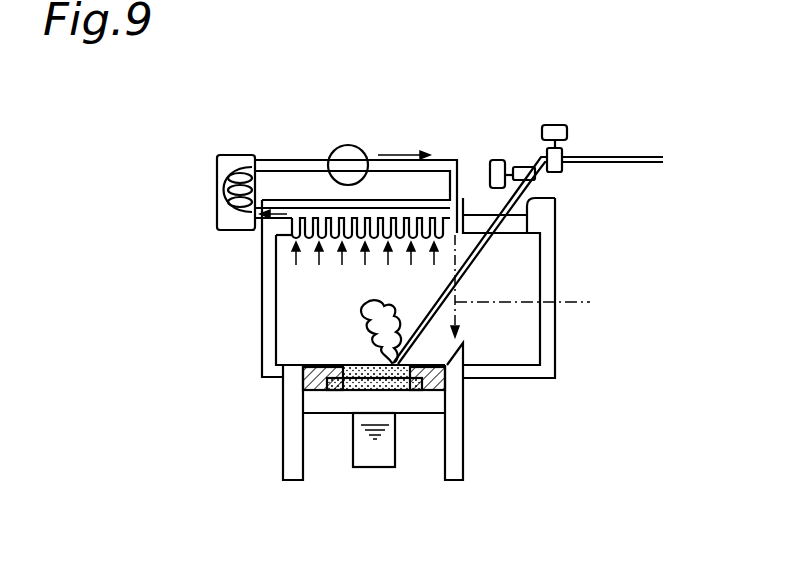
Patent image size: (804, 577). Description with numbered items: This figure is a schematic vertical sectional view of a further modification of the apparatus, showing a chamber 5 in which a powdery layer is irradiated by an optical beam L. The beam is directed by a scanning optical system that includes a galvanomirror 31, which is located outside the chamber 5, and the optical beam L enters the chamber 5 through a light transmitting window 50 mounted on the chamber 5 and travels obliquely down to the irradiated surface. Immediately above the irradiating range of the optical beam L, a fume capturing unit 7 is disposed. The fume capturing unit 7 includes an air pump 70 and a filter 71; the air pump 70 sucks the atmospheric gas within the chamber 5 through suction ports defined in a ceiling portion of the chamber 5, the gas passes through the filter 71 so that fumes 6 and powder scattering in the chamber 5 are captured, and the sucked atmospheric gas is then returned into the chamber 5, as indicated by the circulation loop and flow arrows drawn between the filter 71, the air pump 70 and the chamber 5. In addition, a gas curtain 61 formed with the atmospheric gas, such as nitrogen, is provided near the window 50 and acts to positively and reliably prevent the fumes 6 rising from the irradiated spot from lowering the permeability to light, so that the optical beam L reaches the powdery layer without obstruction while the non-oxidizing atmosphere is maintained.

The fume capturing unit 7 is at (372, 72).
The air pump 70 is at (345, 145).
The filter 71 is at (237, 155).
The galvanomirror 31 is at (523, 157).
The light transmitting window 50 is at (518, 223).
The chamber 5 is at (527, 267).
The gas curtain 61 is at (542, 286).
The fumes 6 is at (360, 338).
The optical beam L is at (542, 244).